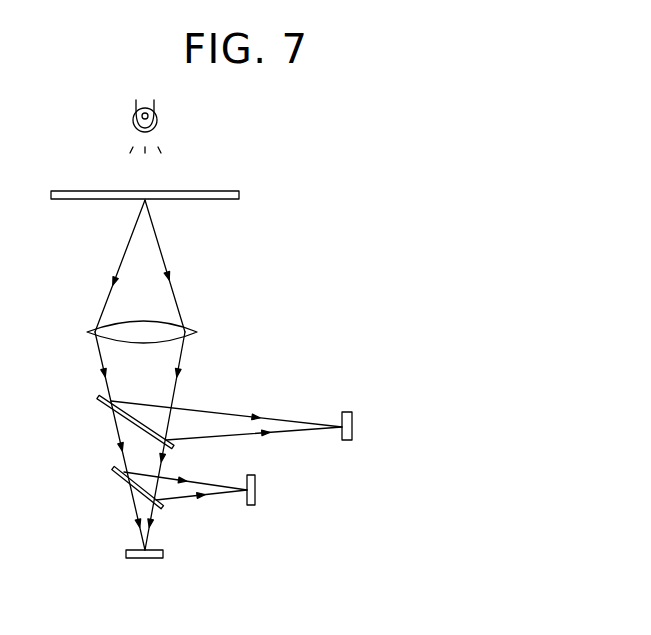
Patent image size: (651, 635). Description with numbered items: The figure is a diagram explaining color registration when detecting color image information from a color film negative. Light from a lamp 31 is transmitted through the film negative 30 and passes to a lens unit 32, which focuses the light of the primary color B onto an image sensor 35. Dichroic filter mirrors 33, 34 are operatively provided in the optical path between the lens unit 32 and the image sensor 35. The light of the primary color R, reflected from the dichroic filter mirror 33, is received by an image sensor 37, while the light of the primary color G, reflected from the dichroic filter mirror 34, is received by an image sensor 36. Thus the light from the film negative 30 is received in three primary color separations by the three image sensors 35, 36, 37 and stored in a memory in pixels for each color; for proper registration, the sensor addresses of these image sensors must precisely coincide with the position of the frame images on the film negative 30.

The film negative 30 is at (229, 200).
The light source lamp 31 is at (112, 113).
The lens unit 32 is at (197, 332).
The dichroic filter mirror 33 is at (104, 401).
The dichroic filter mirror 34 is at (116, 474).
The image sensor 35 is at (163, 554).
The image sensor 36 is at (252, 505).
The image sensor 37 is at (347, 440).